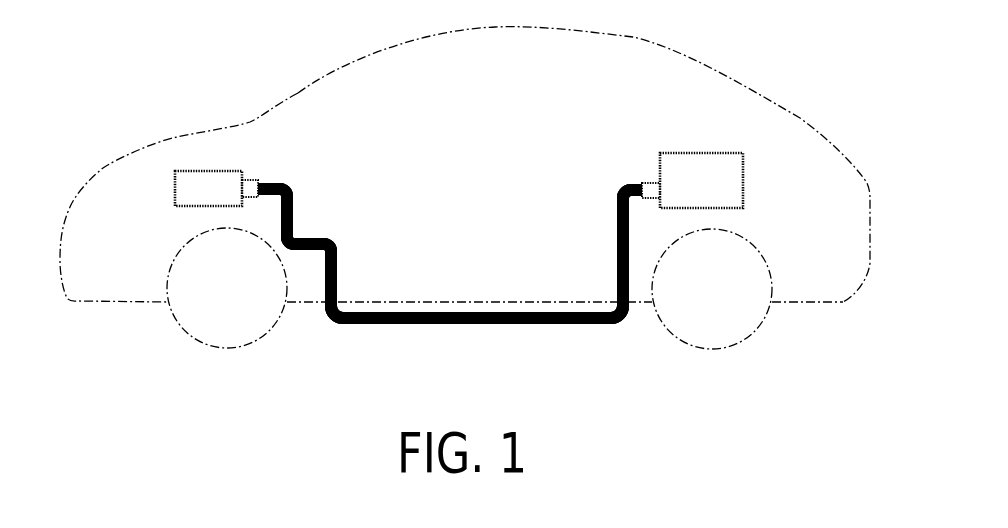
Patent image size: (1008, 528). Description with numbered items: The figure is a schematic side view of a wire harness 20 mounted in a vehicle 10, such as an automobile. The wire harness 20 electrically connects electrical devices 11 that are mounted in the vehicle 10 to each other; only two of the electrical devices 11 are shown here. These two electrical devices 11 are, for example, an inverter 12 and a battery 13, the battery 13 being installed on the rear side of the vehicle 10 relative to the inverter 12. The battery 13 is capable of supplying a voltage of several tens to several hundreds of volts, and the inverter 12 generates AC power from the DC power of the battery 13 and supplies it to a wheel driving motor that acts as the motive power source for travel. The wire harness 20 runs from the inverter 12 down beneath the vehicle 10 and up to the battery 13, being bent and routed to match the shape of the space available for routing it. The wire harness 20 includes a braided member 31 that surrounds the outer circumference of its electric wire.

The vehicle 10 is at (566, 29).
The electrical devices 11 is at (487, 165).
The inverter 12 is at (209, 172).
The battery 13 is at (688, 153).
The wire harness 20 is at (450, 287).
The braided member 31 is at (468, 325).